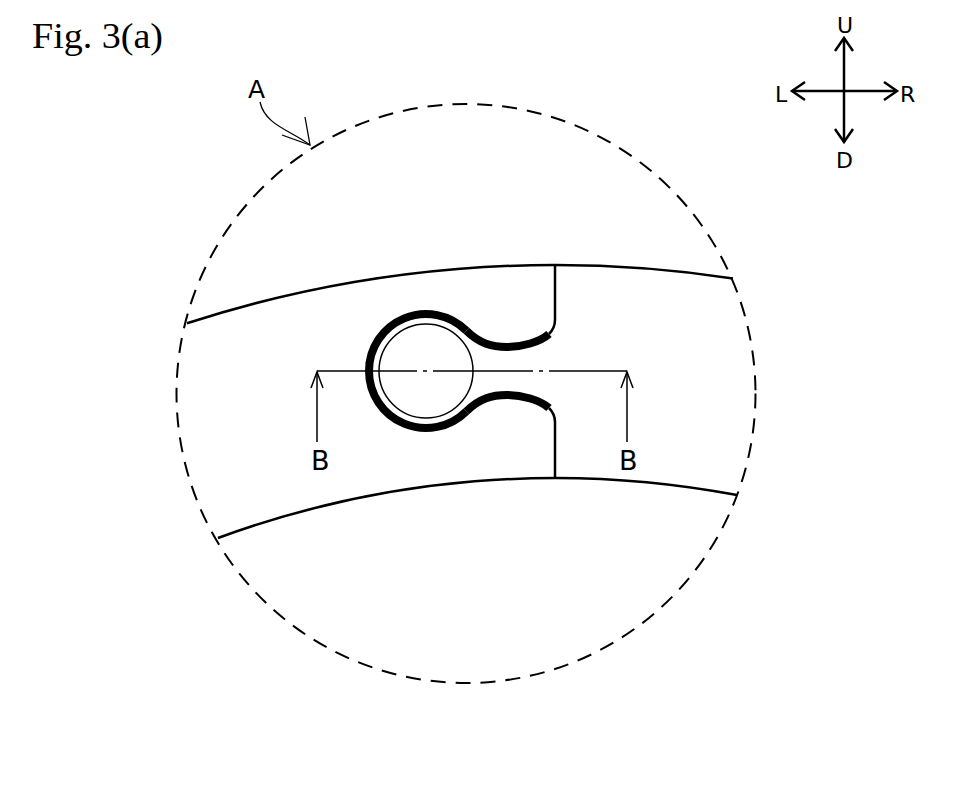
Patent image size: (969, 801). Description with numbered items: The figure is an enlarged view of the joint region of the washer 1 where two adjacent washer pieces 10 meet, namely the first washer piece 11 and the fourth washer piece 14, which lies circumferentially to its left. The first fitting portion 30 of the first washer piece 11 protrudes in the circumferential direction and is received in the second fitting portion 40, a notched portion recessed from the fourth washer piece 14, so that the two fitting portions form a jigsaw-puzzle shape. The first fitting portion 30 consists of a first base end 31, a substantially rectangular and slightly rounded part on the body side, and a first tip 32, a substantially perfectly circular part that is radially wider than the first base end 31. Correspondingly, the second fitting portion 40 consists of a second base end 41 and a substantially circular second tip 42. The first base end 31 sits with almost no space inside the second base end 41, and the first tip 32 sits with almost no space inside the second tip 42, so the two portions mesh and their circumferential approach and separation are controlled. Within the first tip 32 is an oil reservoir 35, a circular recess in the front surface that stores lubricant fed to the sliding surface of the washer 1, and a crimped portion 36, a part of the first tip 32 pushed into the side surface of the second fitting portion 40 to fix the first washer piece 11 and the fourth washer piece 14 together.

The washer 1 is at (427, 378).
The washer piece 10 is at (457, 361).
The first washer piece 11 is at (678, 255).
The fourth washer piece 14 is at (238, 283).
The first fitting portion 30 is at (370, 355).
The first base end 31 is at (512, 362).
The first tip 32 is at (390, 335).
The oil reservoir 35 is at (412, 328).
The crimped portion 36 is at (425, 312).
The second fitting portion 40 is at (547, 338).
The second base end 41 is at (513, 386).
The second tip 42 is at (425, 428).